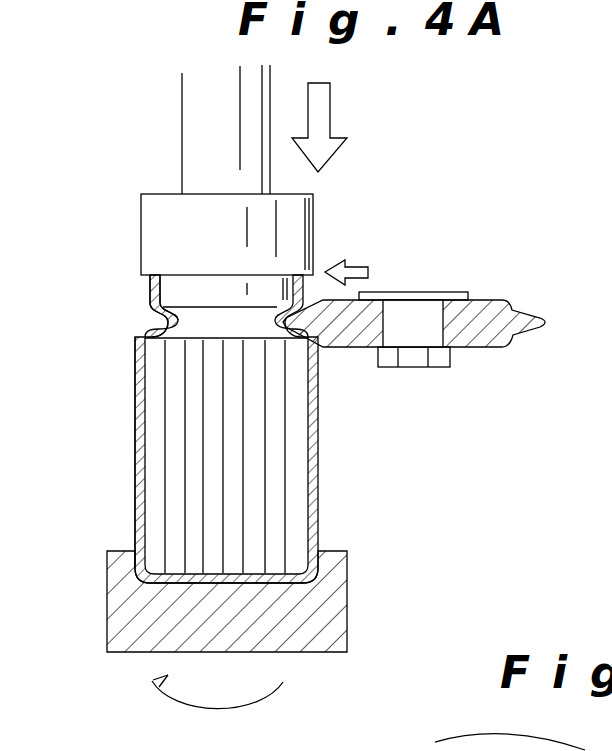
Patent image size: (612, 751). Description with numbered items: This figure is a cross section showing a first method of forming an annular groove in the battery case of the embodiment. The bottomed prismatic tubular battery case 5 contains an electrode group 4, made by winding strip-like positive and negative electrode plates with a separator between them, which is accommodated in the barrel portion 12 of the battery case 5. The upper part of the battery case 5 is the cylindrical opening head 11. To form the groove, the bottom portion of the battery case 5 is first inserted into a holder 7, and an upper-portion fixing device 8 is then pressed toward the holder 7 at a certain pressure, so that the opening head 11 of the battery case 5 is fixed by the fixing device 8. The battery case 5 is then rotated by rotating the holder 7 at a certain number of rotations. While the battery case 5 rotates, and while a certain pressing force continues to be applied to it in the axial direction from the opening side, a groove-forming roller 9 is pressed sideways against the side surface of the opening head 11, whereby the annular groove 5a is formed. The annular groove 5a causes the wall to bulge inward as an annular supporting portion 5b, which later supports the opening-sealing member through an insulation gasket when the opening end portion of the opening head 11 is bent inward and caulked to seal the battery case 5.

The electrode group 4 is at (258, 426).
The battery case 5 is at (318, 473).
The annular groove 5a is at (150, 322).
The annular supporting portion 5b is at (180, 320).
The holder 7 is at (125, 600).
The upper-portion fixing device 8 is at (165, 233).
The groove-forming roller 9 is at (360, 330).
The opening head 11 is at (150, 286).
The barrel portion 12 is at (140, 407).